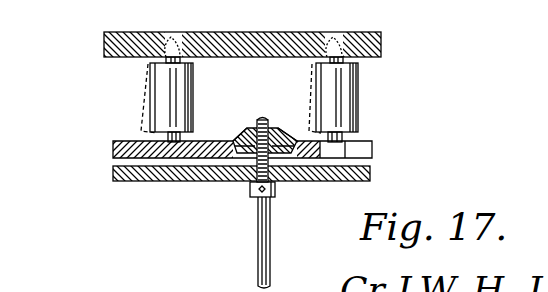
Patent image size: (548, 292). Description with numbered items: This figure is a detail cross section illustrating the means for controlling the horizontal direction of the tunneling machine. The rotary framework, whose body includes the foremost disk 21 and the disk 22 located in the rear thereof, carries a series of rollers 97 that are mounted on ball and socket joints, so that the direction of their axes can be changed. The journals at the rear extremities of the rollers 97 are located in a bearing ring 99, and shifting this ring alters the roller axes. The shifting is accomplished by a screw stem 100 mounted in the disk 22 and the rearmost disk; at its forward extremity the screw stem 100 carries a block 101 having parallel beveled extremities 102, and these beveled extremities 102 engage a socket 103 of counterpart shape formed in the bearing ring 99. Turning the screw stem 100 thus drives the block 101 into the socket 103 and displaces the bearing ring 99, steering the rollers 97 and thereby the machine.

The disk 21 is at (105, 41).
The disk 22 is at (157, 182).
The rollers 97 is at (158, 107).
The bearing ring 99 is at (113, 141).
The screw stem 100 is at (268, 228).
The block 101 is at (277, 125).
The beveled extremities 102 is at (247, 132).
The socket 103 is at (245, 180).